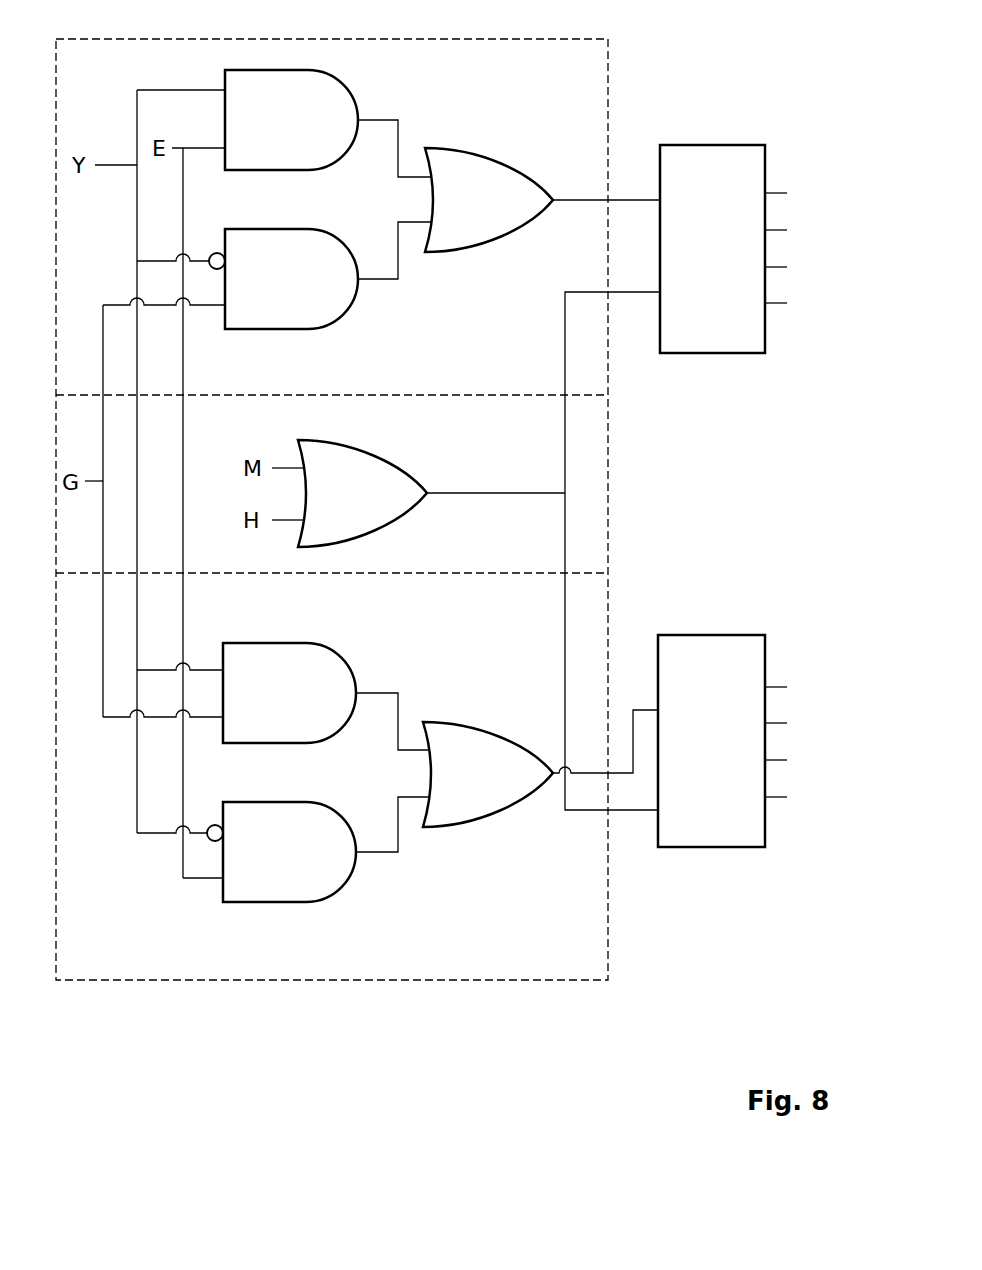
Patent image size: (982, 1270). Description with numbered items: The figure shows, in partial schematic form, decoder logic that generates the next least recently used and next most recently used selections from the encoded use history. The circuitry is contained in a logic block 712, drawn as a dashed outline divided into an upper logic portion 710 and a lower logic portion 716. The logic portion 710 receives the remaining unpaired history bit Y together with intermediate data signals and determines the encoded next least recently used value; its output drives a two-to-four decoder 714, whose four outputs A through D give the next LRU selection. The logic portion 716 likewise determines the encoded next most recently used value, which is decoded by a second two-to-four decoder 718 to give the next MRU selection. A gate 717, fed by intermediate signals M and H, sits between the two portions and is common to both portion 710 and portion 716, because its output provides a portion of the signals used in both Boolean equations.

The logic portion 710 is at (122, 38).
The logic block 712 is at (590, 1017).
The two-to-four decoder 714 is at (732, 338).
The logic portion 716 is at (126, 981).
The gate 717 is at (392, 462).
The two-to-four decoder 718 is at (732, 831).